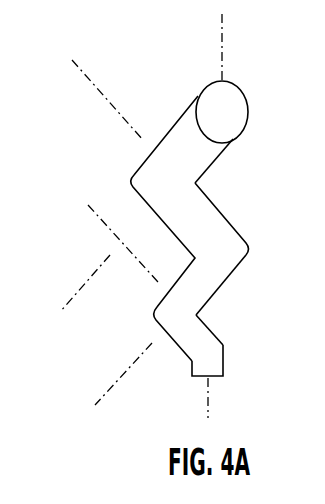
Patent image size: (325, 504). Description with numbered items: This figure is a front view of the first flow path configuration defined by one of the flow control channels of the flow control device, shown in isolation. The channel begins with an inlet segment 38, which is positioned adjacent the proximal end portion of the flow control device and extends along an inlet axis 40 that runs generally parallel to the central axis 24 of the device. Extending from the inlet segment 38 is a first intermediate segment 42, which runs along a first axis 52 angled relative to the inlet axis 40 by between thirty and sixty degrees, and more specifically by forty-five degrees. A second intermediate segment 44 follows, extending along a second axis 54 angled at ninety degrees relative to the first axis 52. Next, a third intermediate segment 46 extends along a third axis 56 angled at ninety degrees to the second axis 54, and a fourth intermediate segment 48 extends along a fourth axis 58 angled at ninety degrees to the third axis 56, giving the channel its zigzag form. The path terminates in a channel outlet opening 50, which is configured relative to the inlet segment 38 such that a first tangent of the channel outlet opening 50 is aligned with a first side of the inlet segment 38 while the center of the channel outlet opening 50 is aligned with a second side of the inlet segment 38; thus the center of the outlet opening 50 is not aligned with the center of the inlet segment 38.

The central axis 24 is at (226, 50).
The inlet segment 38 is at (213, 369).
The inlet axis 40 is at (210, 396).
The first intermediate segment 42 is at (207, 336).
The second intermediate segment 44 is at (225, 268).
The third intermediate segment 46 is at (211, 216).
The fourth intermediate segment 48 is at (210, 160).
The channel outlet opening 50 is at (235, 108).
The first axis 52 is at (110, 220).
The second axis 54 is at (125, 368).
The third axis 56 is at (95, 83).
The fourth axis 58 is at (82, 282).